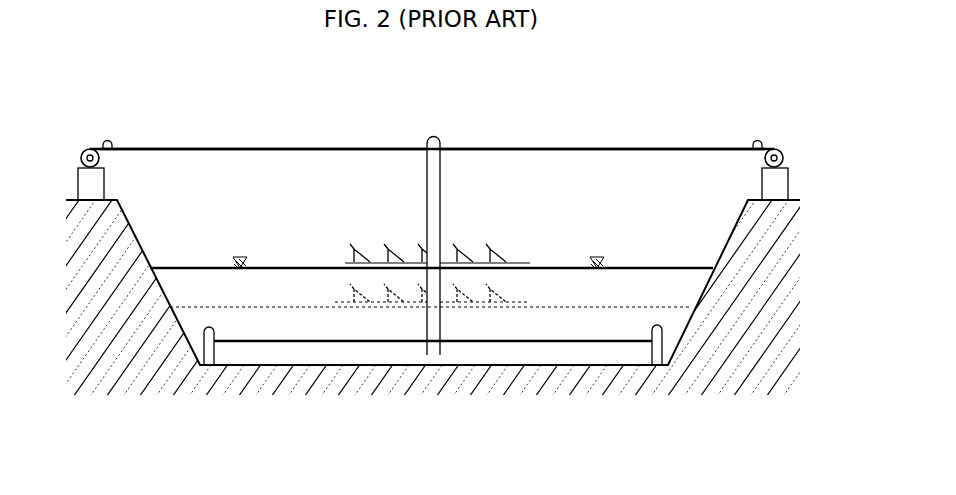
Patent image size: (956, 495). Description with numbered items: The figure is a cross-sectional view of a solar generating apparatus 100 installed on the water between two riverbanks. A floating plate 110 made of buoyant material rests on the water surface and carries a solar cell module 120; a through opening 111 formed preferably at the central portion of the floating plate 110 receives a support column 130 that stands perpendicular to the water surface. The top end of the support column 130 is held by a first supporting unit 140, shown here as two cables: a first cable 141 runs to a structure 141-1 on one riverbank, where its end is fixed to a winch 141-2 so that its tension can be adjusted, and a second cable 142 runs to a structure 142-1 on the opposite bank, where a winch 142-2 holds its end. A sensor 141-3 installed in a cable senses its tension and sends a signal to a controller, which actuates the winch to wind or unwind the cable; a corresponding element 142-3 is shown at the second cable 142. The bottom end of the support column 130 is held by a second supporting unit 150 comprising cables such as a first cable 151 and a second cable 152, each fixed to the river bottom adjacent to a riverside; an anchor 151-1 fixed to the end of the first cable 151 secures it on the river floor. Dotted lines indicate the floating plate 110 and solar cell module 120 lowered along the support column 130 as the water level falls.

The solar generating apparatus 100 is at (432, 132).
The floating plate 110 is at (339, 256).
The through opening 111 is at (455, 295).
The solar cell module 120 is at (490, 278).
The support column 130 is at (431, 137).
The first supporting unit 140 is at (126, 170).
The first cable 141 is at (276, 147).
The structure 141-1 is at (84, 148).
The winch 141-2 is at (78, 185).
The sensor 141-3 is at (109, 141).
The second cable 142 is at (600, 147).
The structure 142-1 is at (786, 148).
The winch 142-2 is at (788, 185).
The right cable hook 142-3 is at (757, 141).
The second supporting unit 150 is at (393, 392).
The first cable 151 is at (385, 346).
The anchor 151-1 is at (205, 360).
The second cable 152 is at (601, 346).